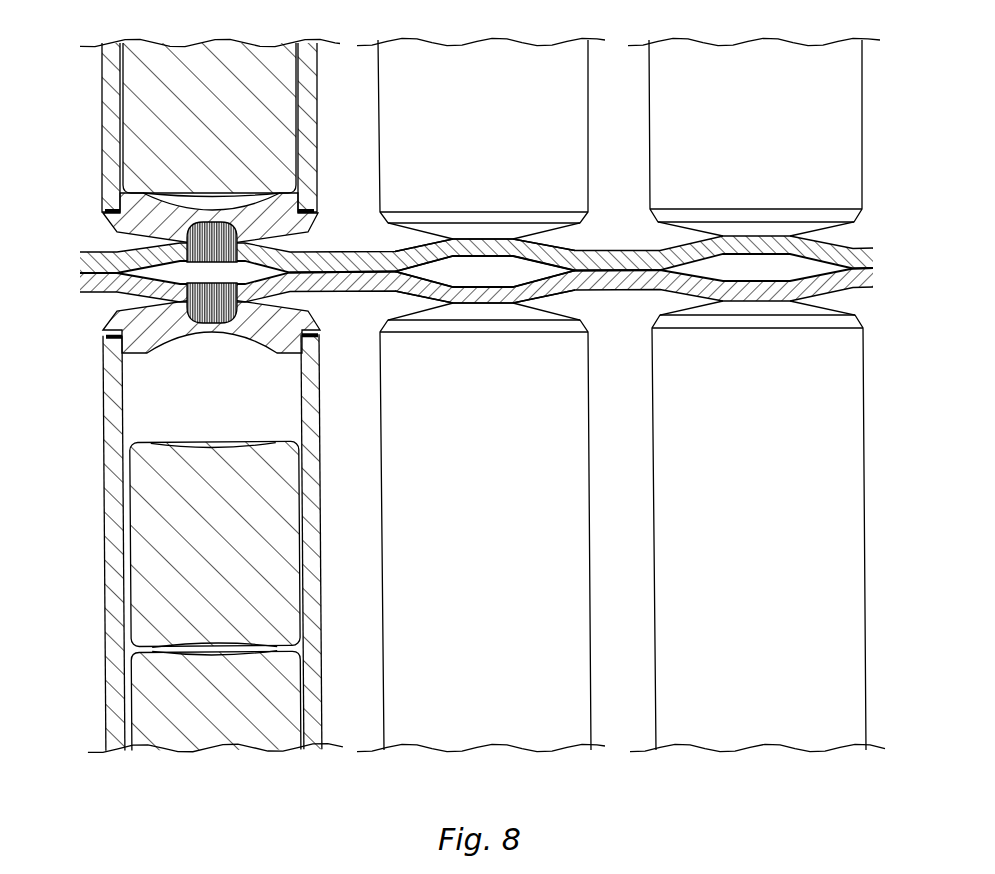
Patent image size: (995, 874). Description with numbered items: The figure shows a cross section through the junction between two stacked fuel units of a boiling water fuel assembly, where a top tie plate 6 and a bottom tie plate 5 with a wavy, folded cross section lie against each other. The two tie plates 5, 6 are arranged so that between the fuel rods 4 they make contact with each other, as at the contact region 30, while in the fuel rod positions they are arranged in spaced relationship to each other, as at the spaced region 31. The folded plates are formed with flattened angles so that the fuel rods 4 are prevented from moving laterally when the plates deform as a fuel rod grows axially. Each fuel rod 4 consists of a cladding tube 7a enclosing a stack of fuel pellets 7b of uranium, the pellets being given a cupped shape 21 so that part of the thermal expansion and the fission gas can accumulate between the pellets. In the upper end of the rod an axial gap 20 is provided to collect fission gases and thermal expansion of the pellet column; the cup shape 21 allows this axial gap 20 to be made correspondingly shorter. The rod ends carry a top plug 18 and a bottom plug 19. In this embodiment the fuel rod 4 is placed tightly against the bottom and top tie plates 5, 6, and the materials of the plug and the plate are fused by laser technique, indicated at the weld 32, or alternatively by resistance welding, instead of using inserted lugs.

The cupped shape 21 is at (160, 170).
The bottom plug 19 is at (143, 213).
The laser weld 32 is at (200, 250).
The top plug 18 is at (133, 333).
The axial gap 20 is at (188, 543).
The fuel pellets 7b is at (160, 538).
The cladding tube 7a is at (115, 614).
The fuel rod 4 is at (402, 548).
The contact region of tie plates 30 is at (358, 263).
The spaced region of tie plates 31 is at (450, 273).
The bottom tie plate 5 is at (872, 245).
The top tie plate 6 is at (872, 291).